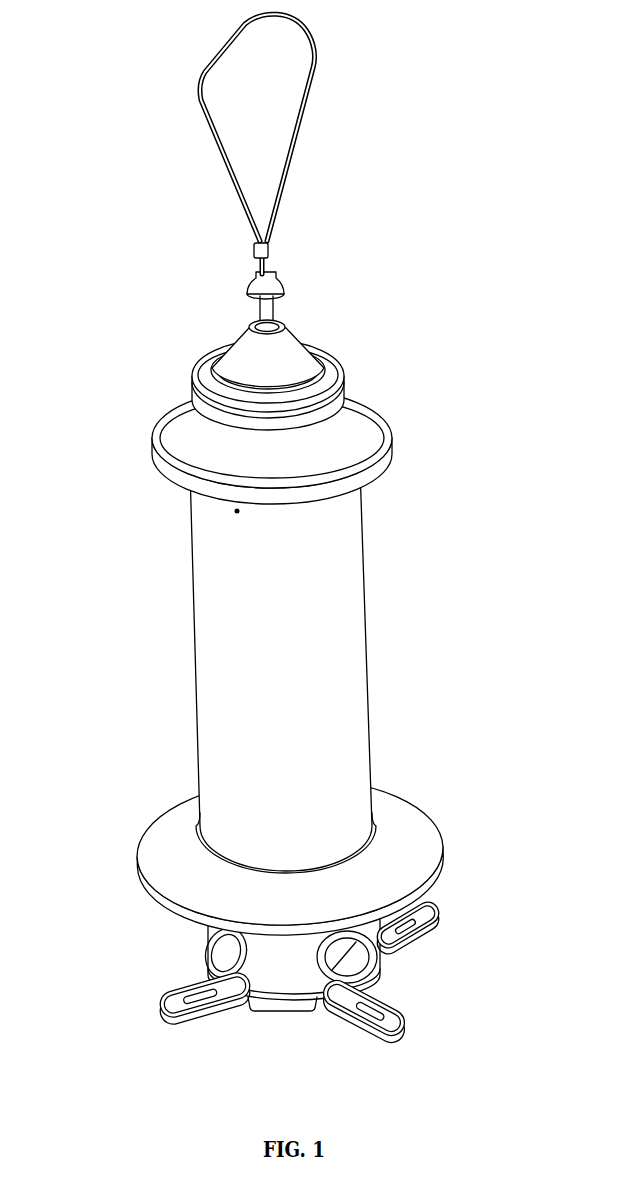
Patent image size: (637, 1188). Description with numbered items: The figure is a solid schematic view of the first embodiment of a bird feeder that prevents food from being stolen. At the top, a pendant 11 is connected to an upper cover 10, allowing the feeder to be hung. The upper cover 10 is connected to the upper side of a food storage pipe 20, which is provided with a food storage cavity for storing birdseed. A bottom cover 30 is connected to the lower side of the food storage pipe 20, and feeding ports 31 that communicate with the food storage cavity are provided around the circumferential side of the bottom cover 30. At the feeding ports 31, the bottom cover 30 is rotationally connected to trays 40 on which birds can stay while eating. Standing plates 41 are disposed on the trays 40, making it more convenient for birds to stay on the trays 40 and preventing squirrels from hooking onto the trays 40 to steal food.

The upper cover 10 is at (320, 423).
The pendant 11 is at (233, 188).
The food storage pipe 20 is at (217, 698).
The bottom cover 30 is at (180, 870).
The feeding ports 31 is at (380, 966).
The trays 40 is at (331, 992).
The standing plates 41 is at (403, 1012).